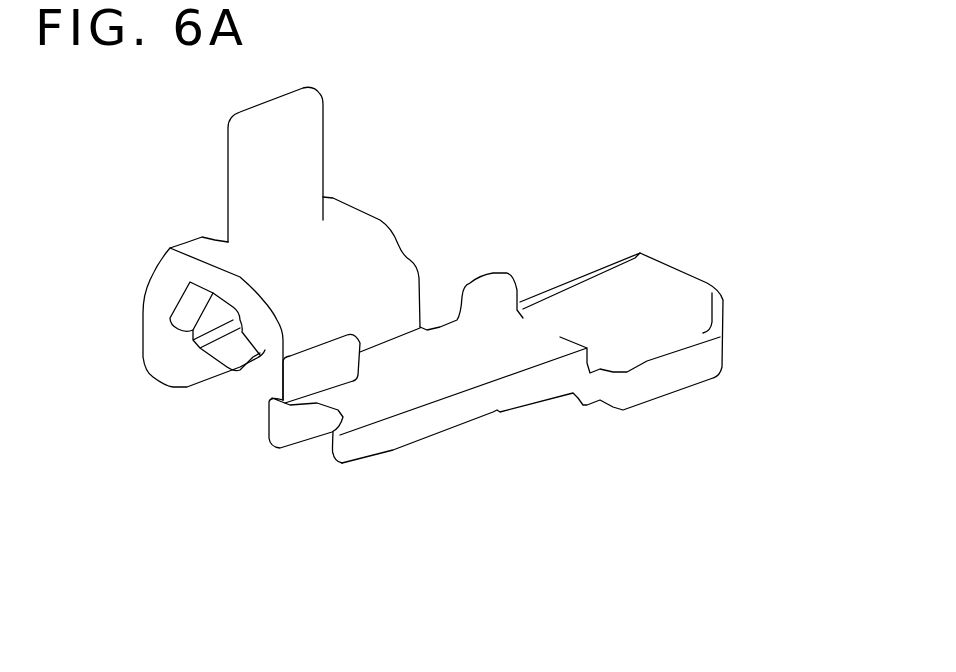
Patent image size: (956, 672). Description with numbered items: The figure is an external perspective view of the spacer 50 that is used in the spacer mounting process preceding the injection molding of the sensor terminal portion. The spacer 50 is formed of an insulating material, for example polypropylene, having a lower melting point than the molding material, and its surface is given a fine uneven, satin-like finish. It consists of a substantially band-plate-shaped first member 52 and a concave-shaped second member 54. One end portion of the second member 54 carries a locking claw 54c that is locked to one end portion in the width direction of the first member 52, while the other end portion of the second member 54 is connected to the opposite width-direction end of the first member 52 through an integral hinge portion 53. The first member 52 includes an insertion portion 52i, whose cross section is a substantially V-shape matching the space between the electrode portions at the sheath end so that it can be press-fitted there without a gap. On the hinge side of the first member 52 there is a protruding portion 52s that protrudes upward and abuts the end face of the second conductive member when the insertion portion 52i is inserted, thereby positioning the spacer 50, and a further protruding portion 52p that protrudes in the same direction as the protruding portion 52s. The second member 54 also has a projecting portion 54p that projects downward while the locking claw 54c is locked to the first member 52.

The spacer 50 is at (653, 182).
The first member 52 is at (557, 423).
The protruding portion 52s is at (497, 273).
The insertion portion 52i is at (700, 290).
The protruding portion 52p is at (302, 382).
The integral hinge portion 53 is at (388, 333).
The second member 54 is at (202, 215).
The projecting portion 54p is at (312, 112).
The locking claw 54c is at (228, 356).